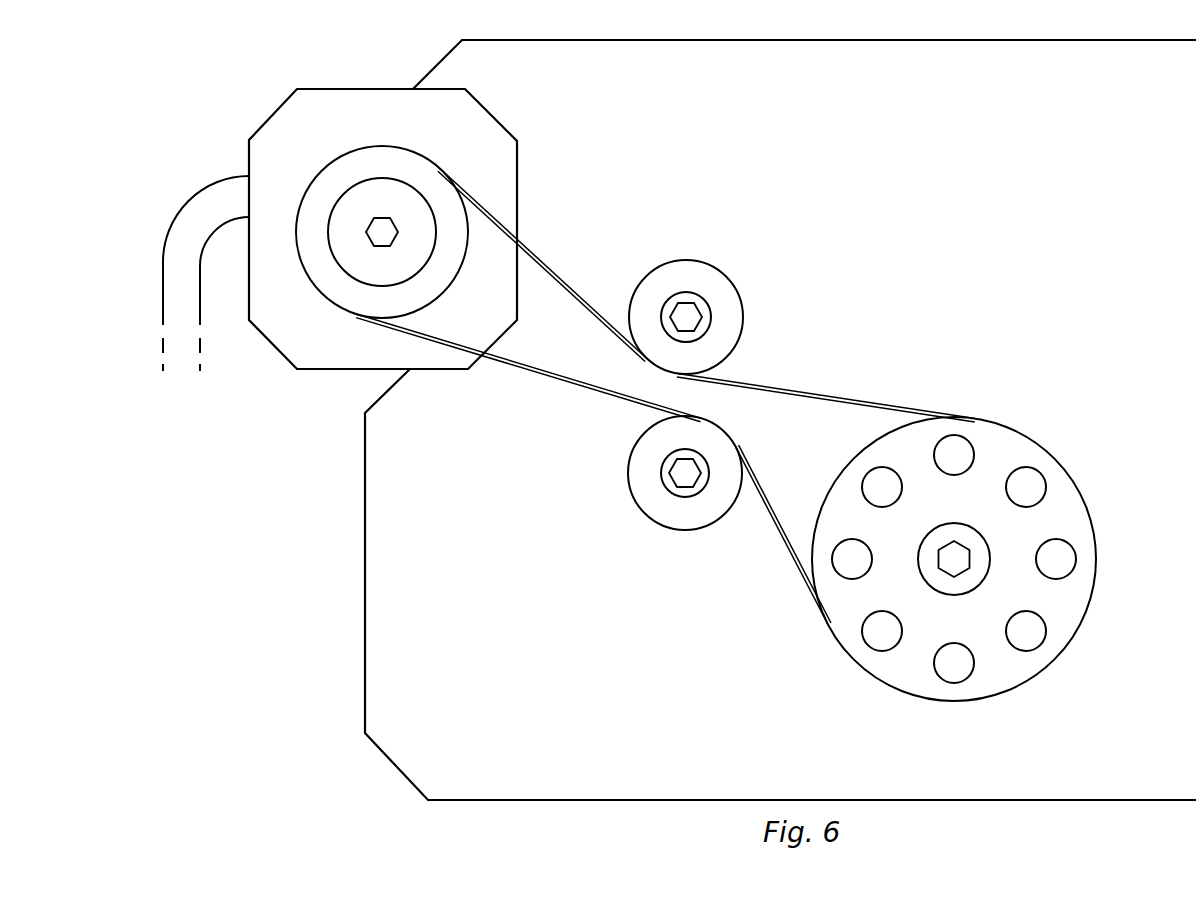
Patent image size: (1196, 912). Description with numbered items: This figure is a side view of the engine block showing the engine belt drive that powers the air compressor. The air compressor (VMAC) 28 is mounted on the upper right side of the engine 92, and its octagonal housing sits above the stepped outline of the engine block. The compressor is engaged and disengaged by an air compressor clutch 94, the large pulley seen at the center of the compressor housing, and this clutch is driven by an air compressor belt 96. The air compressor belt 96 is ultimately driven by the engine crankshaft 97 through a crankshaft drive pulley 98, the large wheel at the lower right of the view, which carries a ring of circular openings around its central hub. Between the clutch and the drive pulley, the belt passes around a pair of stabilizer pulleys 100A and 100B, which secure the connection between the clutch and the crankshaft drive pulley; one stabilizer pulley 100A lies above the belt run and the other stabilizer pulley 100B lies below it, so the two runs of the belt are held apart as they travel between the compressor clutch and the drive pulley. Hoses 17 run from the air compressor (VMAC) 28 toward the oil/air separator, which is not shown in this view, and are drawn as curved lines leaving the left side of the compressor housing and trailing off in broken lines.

The hoses 17 is at (217, 208).
The air compressor (VMAC) 28 is at (302, 146).
The engine 92 is at (483, 620).
The air compressor clutch 94 is at (335, 280).
The air compressor belt 96 is at (572, 380).
The engine crankshaft 97 is at (947, 582).
The crankshaft drive pulley 98 is at (998, 450).
The stabilizer pulley 100A is at (713, 288).
The stabilizer pulley 100B is at (658, 505).